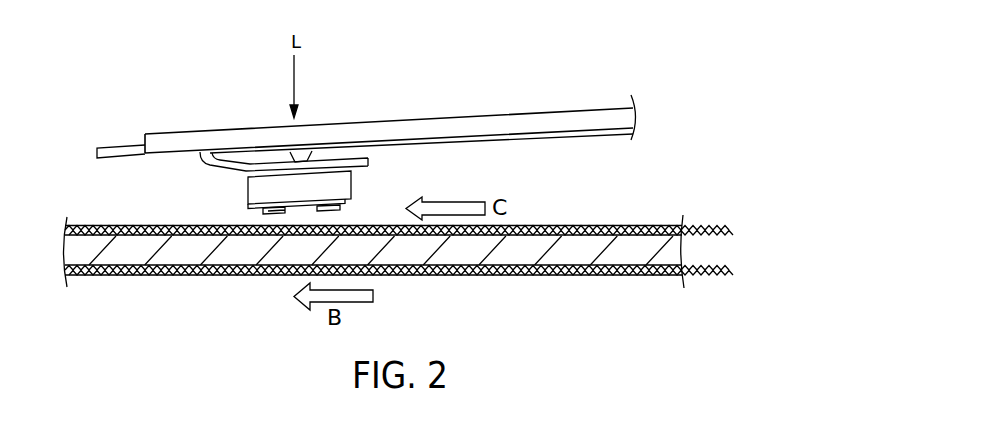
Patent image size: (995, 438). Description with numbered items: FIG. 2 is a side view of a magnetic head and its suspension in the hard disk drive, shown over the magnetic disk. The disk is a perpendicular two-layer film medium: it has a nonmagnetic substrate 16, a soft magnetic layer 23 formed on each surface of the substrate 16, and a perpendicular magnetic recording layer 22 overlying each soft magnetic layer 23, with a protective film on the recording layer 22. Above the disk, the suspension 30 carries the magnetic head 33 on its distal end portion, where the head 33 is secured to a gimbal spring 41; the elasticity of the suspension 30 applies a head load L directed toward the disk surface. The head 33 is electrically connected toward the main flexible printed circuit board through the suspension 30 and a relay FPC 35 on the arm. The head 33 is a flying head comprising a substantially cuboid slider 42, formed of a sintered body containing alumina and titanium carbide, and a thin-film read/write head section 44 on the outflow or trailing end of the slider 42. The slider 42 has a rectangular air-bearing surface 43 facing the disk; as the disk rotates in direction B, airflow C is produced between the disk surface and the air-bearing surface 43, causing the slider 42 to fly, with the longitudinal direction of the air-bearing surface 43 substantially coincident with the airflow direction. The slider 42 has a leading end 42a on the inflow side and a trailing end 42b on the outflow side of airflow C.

The substrate 16 is at (405, 252).
The perpendicular magnetic recording layer 22 is at (616, 228).
The soft magnetic layer 23 is at (675, 241).
The suspension 30 is at (525, 122).
The magnetic head 33 is at (301, 206).
The relay FPC 35 is at (584, 137).
The gimbal spring 41 is at (354, 160).
The slider 42 is at (260, 209).
The leading end 42a is at (358, 173).
The trailing end 42b is at (248, 200).
The air-bearing surface 43 is at (294, 223).
The head section 44 is at (255, 188).